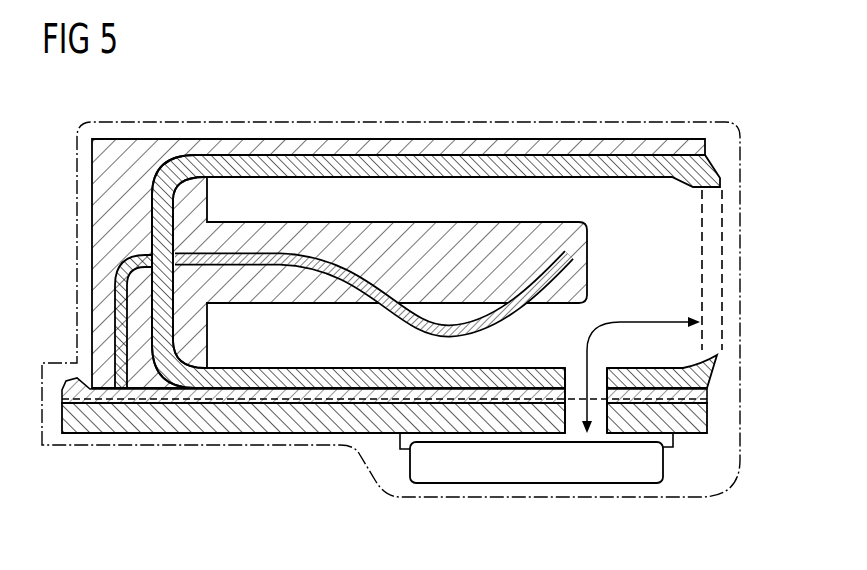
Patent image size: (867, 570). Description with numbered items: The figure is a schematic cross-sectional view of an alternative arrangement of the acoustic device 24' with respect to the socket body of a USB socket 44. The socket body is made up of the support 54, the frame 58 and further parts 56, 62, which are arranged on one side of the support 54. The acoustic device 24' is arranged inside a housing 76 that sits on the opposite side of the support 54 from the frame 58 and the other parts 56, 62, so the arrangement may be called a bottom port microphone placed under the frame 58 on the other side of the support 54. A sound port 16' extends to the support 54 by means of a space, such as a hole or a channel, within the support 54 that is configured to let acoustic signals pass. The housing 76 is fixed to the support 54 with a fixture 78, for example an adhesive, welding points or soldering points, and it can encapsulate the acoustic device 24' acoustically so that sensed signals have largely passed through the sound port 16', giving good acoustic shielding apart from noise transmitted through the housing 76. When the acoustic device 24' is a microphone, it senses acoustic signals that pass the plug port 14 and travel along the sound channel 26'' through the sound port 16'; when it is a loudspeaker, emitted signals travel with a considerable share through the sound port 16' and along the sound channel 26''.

The plug port 14 is at (713, 271).
The sound port 16' is at (582, 378).
The acoustic device 24' is at (540, 519).
The sound channel 26'' is at (641, 349).
The USB socket 44 is at (688, 122).
The support 54 is at (149, 426).
The socket body part 56 is at (615, 167).
The frame 58 is at (147, 150).
The socket body part 62 is at (112, 338).
The housing 76 is at (460, 476).
The fixture 78 is at (675, 442).